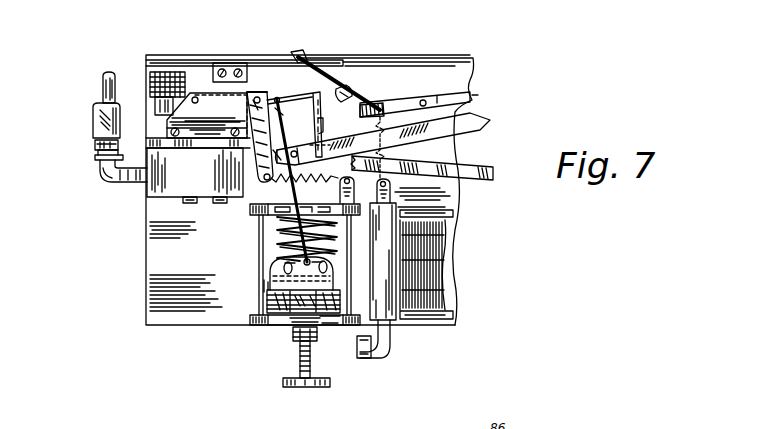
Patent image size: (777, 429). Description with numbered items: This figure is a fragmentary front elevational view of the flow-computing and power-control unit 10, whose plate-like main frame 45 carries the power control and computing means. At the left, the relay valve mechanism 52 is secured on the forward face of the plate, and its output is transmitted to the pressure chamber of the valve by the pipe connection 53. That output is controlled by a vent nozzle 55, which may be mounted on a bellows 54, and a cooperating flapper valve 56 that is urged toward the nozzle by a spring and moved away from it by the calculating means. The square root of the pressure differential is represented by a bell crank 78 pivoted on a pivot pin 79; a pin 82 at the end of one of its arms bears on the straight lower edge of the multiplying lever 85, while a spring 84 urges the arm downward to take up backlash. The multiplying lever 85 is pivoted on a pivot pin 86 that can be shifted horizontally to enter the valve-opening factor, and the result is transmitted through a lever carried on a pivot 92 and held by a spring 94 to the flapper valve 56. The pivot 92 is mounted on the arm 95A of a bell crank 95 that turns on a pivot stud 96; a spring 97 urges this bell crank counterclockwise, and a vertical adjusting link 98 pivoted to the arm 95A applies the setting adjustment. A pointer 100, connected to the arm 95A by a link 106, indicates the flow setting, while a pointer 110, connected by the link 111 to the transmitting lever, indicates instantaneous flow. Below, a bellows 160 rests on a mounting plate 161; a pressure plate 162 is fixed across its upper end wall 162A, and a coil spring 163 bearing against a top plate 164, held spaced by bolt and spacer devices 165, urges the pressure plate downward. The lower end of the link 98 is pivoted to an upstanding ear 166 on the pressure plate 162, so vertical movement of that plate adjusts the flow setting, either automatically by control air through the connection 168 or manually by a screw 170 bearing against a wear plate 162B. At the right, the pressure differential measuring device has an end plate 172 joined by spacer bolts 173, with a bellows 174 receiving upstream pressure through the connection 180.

The flow-computing and power-control unit 10 is at (203, 51).
The main frame plate 45 is at (425, 58).
The relay valve mechanism 52 is at (160, 186).
The pipe connection 53 is at (104, 86).
The bellows 54 is at (151, 78).
The vent nozzle 55 is at (185, 84).
The flapper valve 56 is at (200, 101).
The bell crank 78 is at (416, 96).
The pivot pin 79 is at (426, 100).
The pin 82 is at (376, 104).
The spring 84 is at (386, 153).
The multiplying lever 85 is at (357, 92).
The pivot pin 86 is at (342, 87).
The pivot 92 is at (283, 98).
The spring 94 is at (248, 143).
The bell crank 95 is at (261, 182).
The bell crank arm 95A is at (264, 92).
The pivot stud 96 is at (258, 97).
The spring 97 is at (330, 182).
The vertical adjusting link 98 is at (280, 182).
The pointer 100 is at (480, 119).
The link 106 is at (316, 124).
The pointer 110 is at (489, 181).
The link 111 is at (325, 126).
The bellows 160 is at (284, 318).
The mounting plate 161 is at (255, 317).
The pressure plate 162 is at (270, 276).
The upper end wall 162A is at (325, 324).
The wear plate 162B is at (267, 306).
The coil spring 163 is at (283, 240).
The top plate 164 is at (262, 215).
The bolt and spacer devices 165 is at (262, 286).
The upstanding ear 166 is at (320, 261).
The connection 168 is at (294, 341).
The screw 170 is at (312, 364).
The end plate 172 is at (402, 318).
The spacer bolts 173 is at (440, 216).
The bellows 174 is at (446, 306).
The connection 180 is at (391, 353).